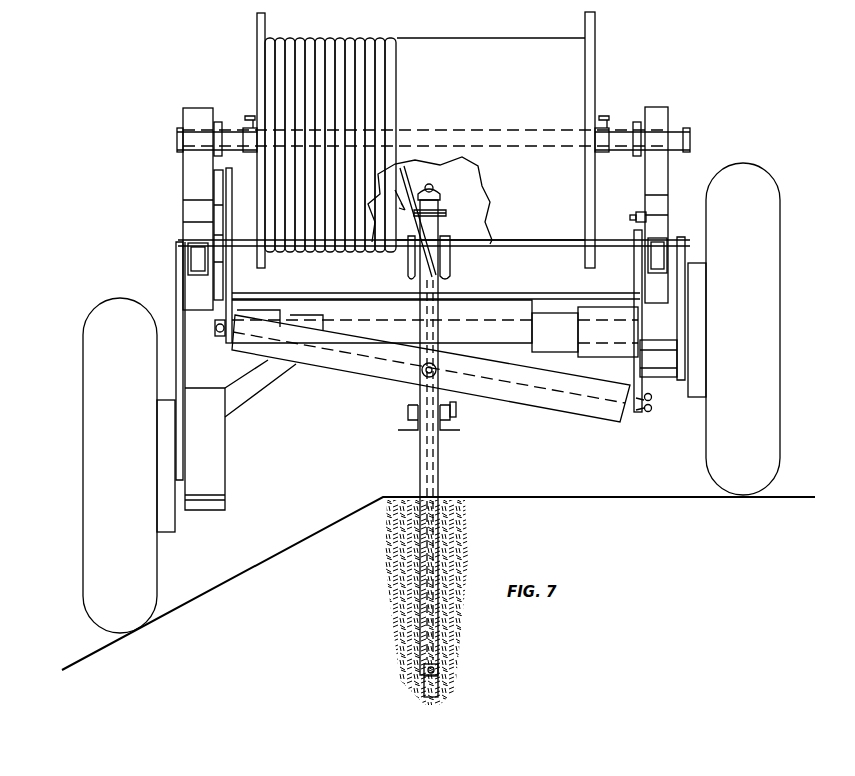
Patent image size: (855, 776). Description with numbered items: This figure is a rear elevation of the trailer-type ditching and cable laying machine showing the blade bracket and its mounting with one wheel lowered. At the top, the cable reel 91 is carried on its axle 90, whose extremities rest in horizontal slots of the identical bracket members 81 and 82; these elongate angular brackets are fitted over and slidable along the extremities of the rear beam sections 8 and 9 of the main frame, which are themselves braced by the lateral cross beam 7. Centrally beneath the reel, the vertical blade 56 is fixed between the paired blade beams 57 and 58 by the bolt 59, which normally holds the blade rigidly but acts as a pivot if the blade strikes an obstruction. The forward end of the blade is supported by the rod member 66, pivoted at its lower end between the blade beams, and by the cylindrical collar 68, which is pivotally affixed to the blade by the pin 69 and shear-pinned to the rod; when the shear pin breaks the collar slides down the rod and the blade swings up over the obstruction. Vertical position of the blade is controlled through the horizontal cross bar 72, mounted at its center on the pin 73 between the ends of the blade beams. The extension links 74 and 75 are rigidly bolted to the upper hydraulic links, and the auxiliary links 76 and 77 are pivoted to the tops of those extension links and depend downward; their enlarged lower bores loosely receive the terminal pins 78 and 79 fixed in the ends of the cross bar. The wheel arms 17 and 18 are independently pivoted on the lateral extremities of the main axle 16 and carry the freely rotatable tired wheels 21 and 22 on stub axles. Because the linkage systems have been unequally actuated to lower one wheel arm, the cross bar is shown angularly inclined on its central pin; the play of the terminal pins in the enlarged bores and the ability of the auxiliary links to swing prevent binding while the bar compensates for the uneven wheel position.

The cable reel 91 is at (595, 30).
The axle 90 is at (177, 140).
The bracket member 82 is at (200, 115).
The bracket member 81 is at (666, 118).
The extension link 74 is at (214, 193).
The auxiliary link 76 is at (232, 285).
The rear beam section 8 is at (190, 255).
The rear beam section 9 is at (662, 243).
The extension link 75 is at (640, 214).
The lateral cross beam 7 is at (465, 248).
The rod member 66 is at (415, 220).
The cylindrical collar 68 is at (438, 197).
The pin 69 is at (446, 213).
The blade 56 is at (415, 490).
The axle 16 is at (473, 334).
The wheel arm 18 is at (592, 310).
The auxiliary link 77 is at (634, 288).
The wheel arm 17 is at (265, 312).
The cross bar 72 is at (555, 395).
The pin 78 is at (216, 330).
The pin 73 is at (422, 377).
The blade beam 57 is at (406, 430).
The blade beam 58 is at (460, 430).
The bolt 59 is at (456, 409).
The pin 79 is at (650, 412).
The tired wheel 21 is at (83, 450).
The tired wheel 22 is at (780, 340).